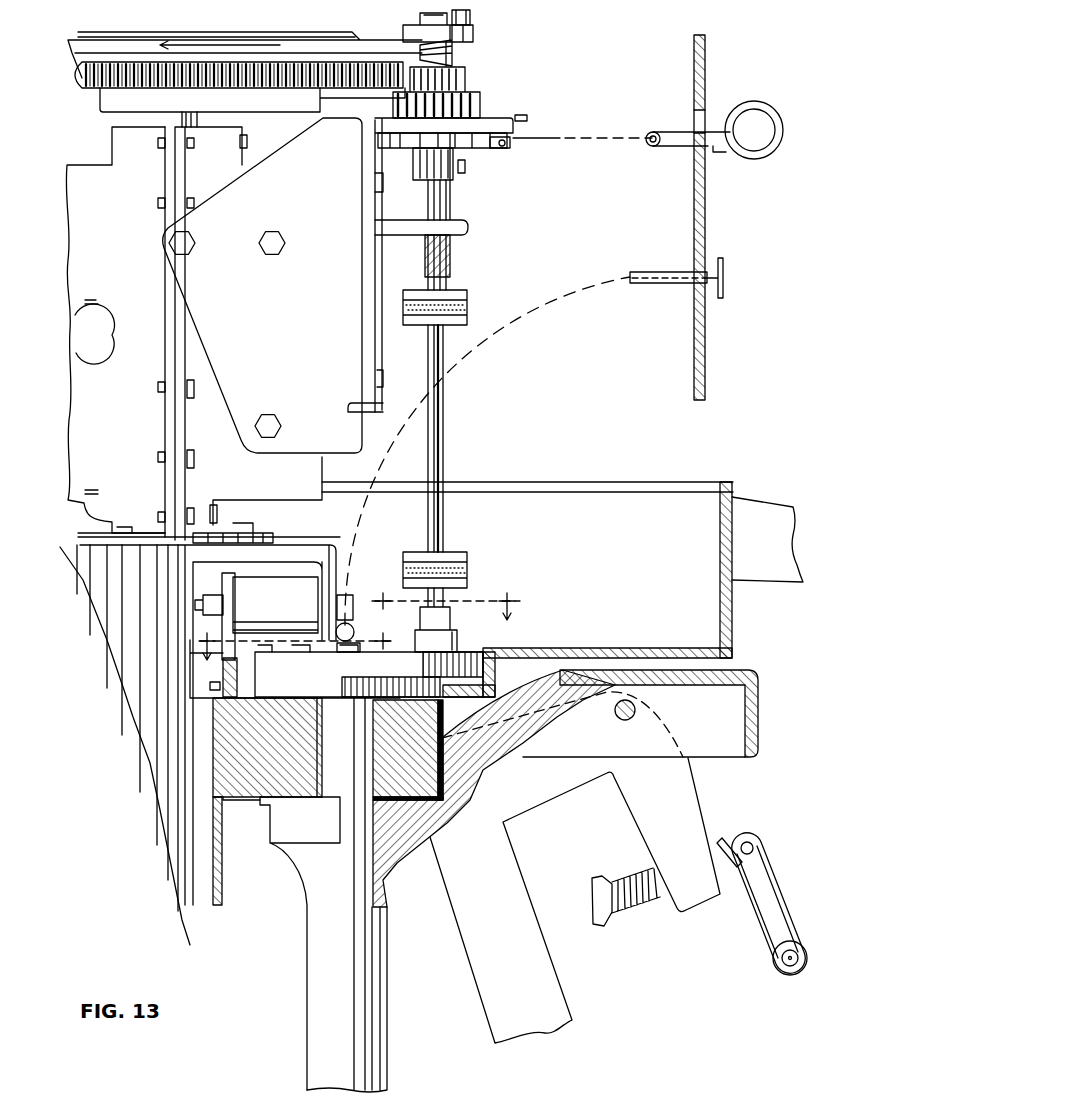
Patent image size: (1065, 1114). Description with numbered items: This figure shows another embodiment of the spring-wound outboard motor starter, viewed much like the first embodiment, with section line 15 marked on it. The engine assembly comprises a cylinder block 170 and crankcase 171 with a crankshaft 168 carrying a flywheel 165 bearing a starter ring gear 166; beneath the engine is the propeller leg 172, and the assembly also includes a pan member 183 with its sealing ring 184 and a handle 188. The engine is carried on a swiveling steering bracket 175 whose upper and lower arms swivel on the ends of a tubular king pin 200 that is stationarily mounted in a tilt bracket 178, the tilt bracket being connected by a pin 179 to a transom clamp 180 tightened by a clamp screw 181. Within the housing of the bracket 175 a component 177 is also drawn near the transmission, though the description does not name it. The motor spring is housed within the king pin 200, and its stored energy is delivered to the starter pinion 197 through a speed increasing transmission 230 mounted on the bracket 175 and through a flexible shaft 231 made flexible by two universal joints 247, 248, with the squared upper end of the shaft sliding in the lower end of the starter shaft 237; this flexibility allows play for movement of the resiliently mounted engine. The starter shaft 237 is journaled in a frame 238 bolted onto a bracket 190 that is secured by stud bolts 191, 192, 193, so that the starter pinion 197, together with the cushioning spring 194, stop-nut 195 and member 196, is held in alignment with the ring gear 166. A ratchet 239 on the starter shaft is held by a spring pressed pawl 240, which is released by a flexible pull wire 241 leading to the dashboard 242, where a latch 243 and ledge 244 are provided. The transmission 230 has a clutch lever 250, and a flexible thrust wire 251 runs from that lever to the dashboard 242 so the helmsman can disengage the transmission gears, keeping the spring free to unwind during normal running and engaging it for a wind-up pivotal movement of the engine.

The section line 15- 15 is at (359, 639).
The flywheel 165 is at (139, 36).
The starter ring gear 166 is at (82, 92).
The crankshaft 168 is at (164, 118).
The cylinder block 170 is at (124, 236).
The crankcase 171 is at (255, 482).
The propeller leg 172 is at (130, 705).
The swiveling steering bracket 175 is at (223, 886).
The housing 177 is at (287, 601).
The tilt bracket 178 is at (400, 860).
The pin 179 is at (624, 720).
The transom clamp 180 is at (667, 799).
The clamp screw 181 is at (640, 905).
The pan member 183 is at (657, 648).
The sealing ring 184 is at (612, 488).
The handle 188 is at (775, 544).
The bracket 190 is at (287, 324).
The stud bolt 191 is at (186, 253).
The stud bolt 192 is at (276, 253).
The stud bolt 193 is at (278, 418).
The cushioning spring 194 is at (420, 18).
The stop-nut 195 is at (473, 32).
The member 196 is at (453, 48).
The starter pinion 197 is at (481, 101).
The king pin 200 is at (330, 797).
The speed increasing transmission 230 is at (302, 684).
The flexible shaft 231 is at (455, 442).
The starter shaft 237 is at (455, 195).
The frame 238 is at (378, 267).
The ratchet 239 is at (470, 148).
The pawl 240 is at (510, 146).
The flexible pull wire 241 is at (548, 136).
The dashboard 242 is at (707, 222).
The latch 243 is at (668, 128).
The ledge 244 is at (693, 150).
The flexible joint 247 is at (463, 294).
The flexible joint 248 is at (466, 558).
The clutch lever 250 is at (358, 630).
The flexible thrust wire 251 is at (592, 285).